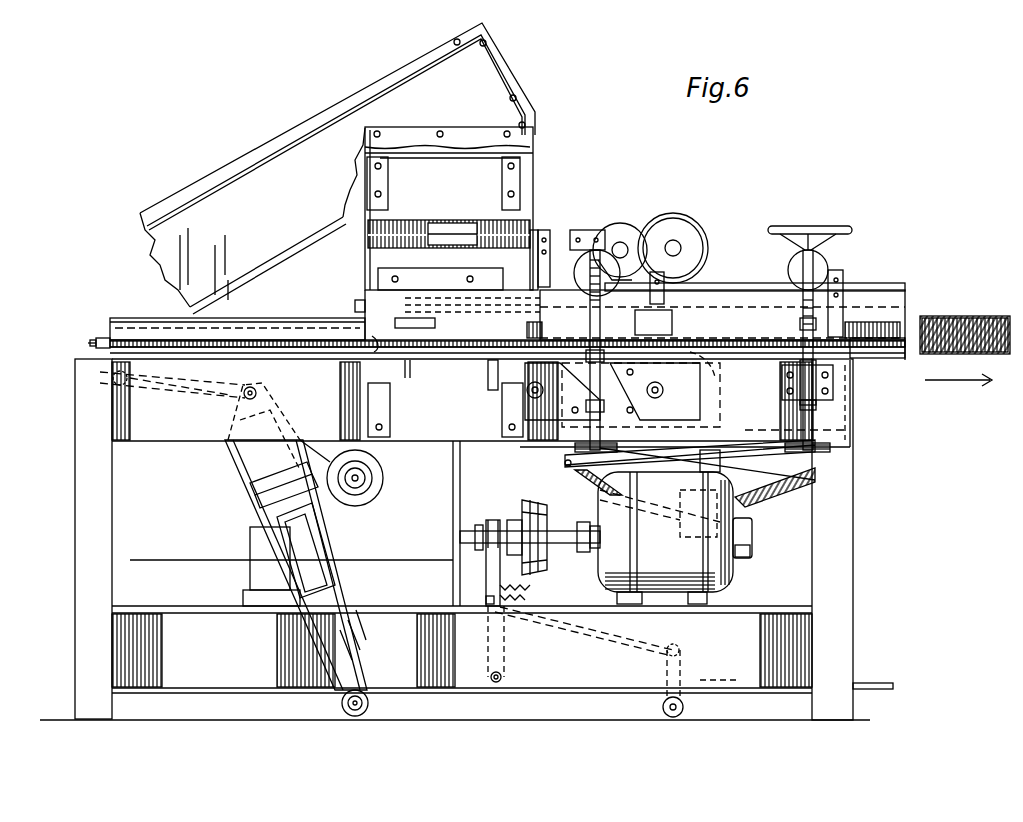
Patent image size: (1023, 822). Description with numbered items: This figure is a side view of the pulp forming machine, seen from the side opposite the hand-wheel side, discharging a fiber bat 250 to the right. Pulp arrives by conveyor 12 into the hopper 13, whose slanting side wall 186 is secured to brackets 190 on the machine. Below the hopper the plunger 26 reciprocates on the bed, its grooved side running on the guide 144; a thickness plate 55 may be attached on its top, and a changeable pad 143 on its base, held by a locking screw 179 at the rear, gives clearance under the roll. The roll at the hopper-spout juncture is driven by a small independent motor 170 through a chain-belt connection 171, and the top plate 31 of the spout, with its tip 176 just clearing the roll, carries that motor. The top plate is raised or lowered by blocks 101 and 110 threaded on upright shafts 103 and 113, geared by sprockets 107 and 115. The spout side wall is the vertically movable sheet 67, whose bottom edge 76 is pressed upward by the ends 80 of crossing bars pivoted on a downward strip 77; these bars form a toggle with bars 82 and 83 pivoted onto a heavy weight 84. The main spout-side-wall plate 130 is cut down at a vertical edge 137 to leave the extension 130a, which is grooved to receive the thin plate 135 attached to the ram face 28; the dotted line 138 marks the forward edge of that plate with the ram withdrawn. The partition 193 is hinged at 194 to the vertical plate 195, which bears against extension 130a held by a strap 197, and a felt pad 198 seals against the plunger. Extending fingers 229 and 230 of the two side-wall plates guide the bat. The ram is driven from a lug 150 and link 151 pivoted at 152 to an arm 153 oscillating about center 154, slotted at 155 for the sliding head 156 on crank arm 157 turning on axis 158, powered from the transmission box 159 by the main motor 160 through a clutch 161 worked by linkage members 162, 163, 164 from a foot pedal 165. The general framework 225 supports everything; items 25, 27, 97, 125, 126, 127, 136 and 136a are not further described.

The conveyor 12 is at (245, 182).
The hopper 13 is at (480, 158).
The bracket 25 is at (525, 236).
The plunger 26 is at (230, 340).
The support 27 is at (493, 362).
The face of the plunger 28 is at (400, 331).
The top plate 31 is at (769, 284).
The thickness plate 55 is at (237, 330).
The vertically movable sheet 67 is at (848, 407).
The bottom edge of plate 67 76 is at (854, 434).
The downward strip 77 is at (671, 324).
The end of crossing bar 80 is at (787, 415).
The toggle bar 82 is at (750, 523).
The toggle bar 83 is at (567, 470).
The heavy weight 84 is at (754, 538).
The adjusting screw 97 is at (602, 237).
The block 101 is at (825, 272).
The upright shaft 103 is at (815, 322).
The sprocket 107 is at (830, 447).
The block 110 is at (808, 228).
The vertical shaft 113 is at (637, 404).
The sprocket 115 is at (575, 450).
The rail 125 is at (694, 292).
The bracket 126 is at (843, 295).
The bracket 127 is at (664, 292).
The spout-side-wall plate 130 is at (700, 328).
The guide plate extension 130a is at (375, 308).
The thin plate 135 is at (420, 356).
The housing 136 is at (506, 344).
The block 136a is at (779, 386).
The vertical edge 137 is at (588, 328).
The forward edge 138 is at (677, 357).
The thickness plate 143 is at (145, 325).
The guide 144 is at (92, 346).
The lug 150 is at (100, 378).
The link 151 is at (180, 404).
The pivot 152 is at (276, 412).
The arm 153 is at (245, 468).
The center 154 is at (356, 717).
The slot 155 is at (305, 560).
The sliding head 156 is at (262, 522).
The crank arm 157 is at (343, 500).
The axis 158 is at (378, 474).
The transmission box 159 is at (440, 487).
The main motor 160 is at (673, 574).
The clutch 161 is at (537, 576).
The linkage member 162 is at (493, 641).
The linkage member 163 is at (570, 624).
The linkage member 164 is at (704, 680).
The foot pedal 165 is at (879, 684).
The independent motor 170 is at (682, 235).
The chain-belt connection 171 is at (628, 224).
The tip of top plate 176 is at (355, 333).
The locking screw 179 is at (97, 340).
The slanting side wall 186 is at (450, 175).
The bracket 190 is at (368, 175).
The movable partition 193 is at (474, 227).
The hinge 194 is at (452, 228).
The vertical plate 195 is at (395, 250).
The strap 197 is at (445, 298).
The felt pad 198 is at (507, 331).
The general framework 225 is at (82, 464).
The extending finger 229 is at (880, 358).
The extending finger 230 is at (840, 329).
The fiber bat 250 is at (965, 334).